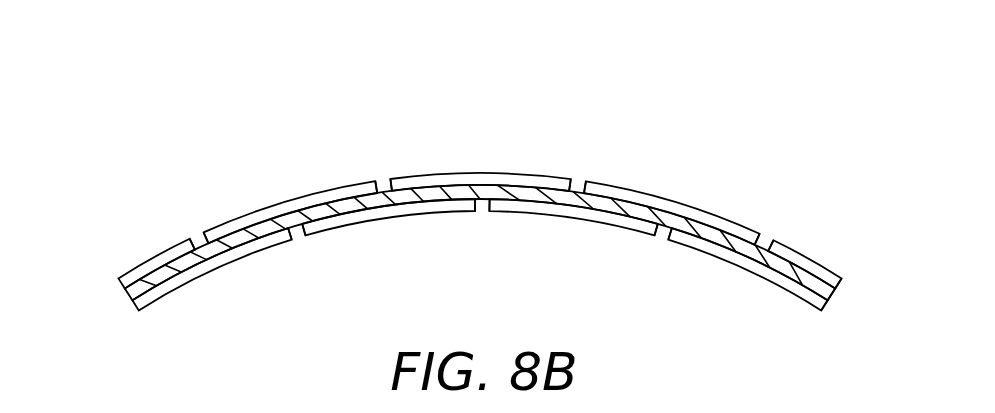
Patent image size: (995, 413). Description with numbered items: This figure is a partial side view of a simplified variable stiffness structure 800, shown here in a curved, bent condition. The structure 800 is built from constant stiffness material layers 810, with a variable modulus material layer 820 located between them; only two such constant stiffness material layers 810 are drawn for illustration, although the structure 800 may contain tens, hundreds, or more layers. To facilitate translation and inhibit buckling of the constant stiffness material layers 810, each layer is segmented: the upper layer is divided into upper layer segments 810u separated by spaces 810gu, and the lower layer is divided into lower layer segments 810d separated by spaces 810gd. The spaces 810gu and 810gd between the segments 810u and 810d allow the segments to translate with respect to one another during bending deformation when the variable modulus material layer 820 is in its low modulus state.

The variable stiffness structure 800 is at (243, 154).
The constant stiffness material layers 810 is at (127, 317).
The upper layer segments 810u is at (145, 272).
The lower layer segments 810d is at (190, 280).
The spaces between upper layer segments 810gu is at (203, 233).
The spaces between lower layer segments 810gd is at (302, 235).
The variable modulus material layer 820 is at (835, 296).